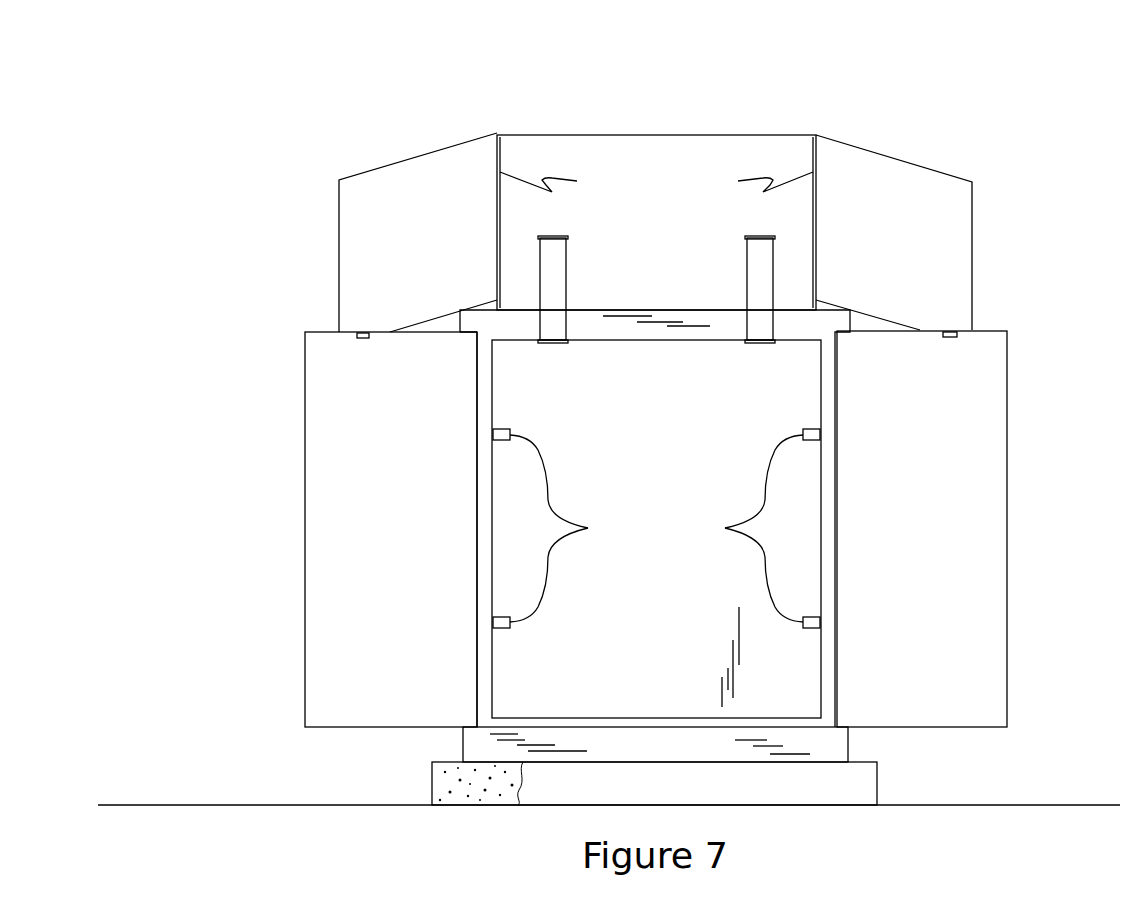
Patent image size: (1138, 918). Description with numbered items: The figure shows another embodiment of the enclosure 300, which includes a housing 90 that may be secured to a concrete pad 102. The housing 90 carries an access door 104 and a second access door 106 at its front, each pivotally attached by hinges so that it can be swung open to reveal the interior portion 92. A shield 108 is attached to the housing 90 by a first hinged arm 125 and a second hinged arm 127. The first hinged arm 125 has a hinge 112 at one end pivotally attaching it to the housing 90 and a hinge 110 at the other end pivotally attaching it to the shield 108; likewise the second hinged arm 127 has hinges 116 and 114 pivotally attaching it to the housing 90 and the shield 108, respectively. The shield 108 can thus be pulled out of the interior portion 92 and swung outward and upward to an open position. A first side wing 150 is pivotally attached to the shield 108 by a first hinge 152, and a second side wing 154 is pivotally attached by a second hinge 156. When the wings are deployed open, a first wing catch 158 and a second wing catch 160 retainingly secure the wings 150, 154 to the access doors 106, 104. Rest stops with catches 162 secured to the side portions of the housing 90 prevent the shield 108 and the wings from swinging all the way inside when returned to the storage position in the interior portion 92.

The enclosure 300 is at (888, 73).
The shield 108 is at (658, 135).
The second side wing 154 is at (423, 153).
The first side wing 150 is at (893, 150).
The second hinge 156 is at (556, 184).
The first hinge 152 is at (750, 184).
The hinge 114 is at (555, 236).
The hinge 110 is at (763, 236).
The second hinged arm 127 is at (566, 322).
The first hinged arm 125 is at (747, 322).
The hinge 116 is at (550, 345).
The hinge 112 is at (762, 345).
The access door 104 is at (305, 557).
The second access door 106 is at (1008, 545).
The second wing catch 160 is at (356, 337).
The first wing catch 158 is at (958, 335).
The rest stops with catches 162 is at (656, 528).
The interior portion 92 is at (660, 593).
The housing 90 is at (462, 743).
The concrete pad 102 is at (858, 782).